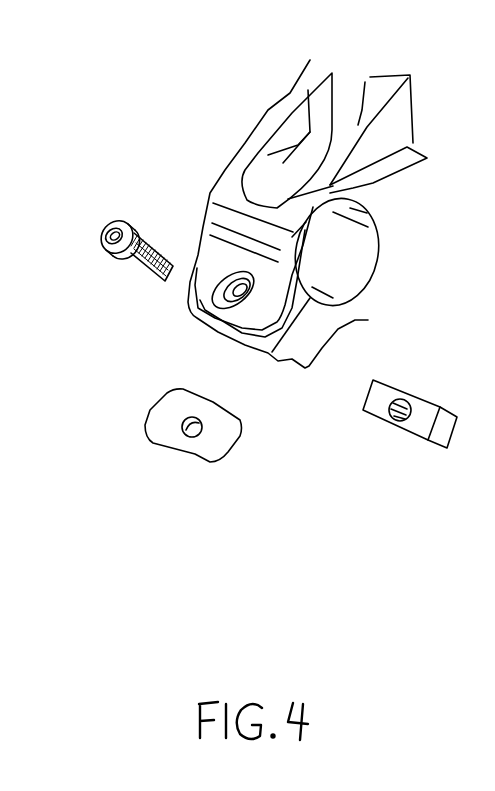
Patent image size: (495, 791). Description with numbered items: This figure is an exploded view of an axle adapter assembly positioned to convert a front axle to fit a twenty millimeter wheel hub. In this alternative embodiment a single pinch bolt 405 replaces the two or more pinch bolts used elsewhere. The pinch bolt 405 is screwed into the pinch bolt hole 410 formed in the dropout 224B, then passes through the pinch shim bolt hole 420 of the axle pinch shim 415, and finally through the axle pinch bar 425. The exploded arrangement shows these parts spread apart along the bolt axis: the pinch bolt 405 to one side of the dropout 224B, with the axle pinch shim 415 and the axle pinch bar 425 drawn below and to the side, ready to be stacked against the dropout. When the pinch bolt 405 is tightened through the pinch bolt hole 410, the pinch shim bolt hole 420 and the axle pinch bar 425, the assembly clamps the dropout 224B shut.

The dropout 224B is at (347, 270).
The pinch bolt 405 is at (128, 257).
The pinch bolt hole 410 is at (235, 298).
The axle pinch shim 415 is at (193, 460).
The pinch shim bolt hole 420 is at (200, 420).
The axle pinch bar 425 is at (393, 430).